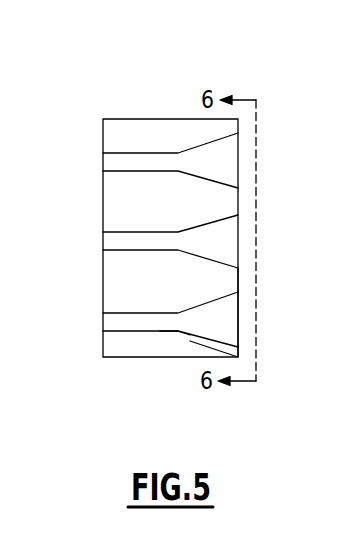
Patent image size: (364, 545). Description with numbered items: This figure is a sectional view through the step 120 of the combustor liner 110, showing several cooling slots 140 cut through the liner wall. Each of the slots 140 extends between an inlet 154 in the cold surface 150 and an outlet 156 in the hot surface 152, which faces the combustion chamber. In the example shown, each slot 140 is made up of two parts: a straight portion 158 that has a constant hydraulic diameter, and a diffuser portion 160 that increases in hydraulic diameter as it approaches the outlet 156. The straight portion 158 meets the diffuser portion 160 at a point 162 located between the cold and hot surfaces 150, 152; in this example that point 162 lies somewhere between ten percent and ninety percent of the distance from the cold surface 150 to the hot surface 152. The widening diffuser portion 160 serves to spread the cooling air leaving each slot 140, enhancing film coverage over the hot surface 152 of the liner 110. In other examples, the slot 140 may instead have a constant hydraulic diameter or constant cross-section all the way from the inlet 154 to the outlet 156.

The liner 110 is at (135, 92).
The step 120 is at (160, 127).
The slots 140 is at (132, 160).
The cold surface 150 is at (103, 284).
The hot surface 152 is at (238, 282).
The inlet 154 is at (103, 323).
The outlet 156 is at (238, 325).
The straight portion 158 is at (137, 322).
The diffuser portion 160 is at (207, 342).
The point 162 is at (173, 330).